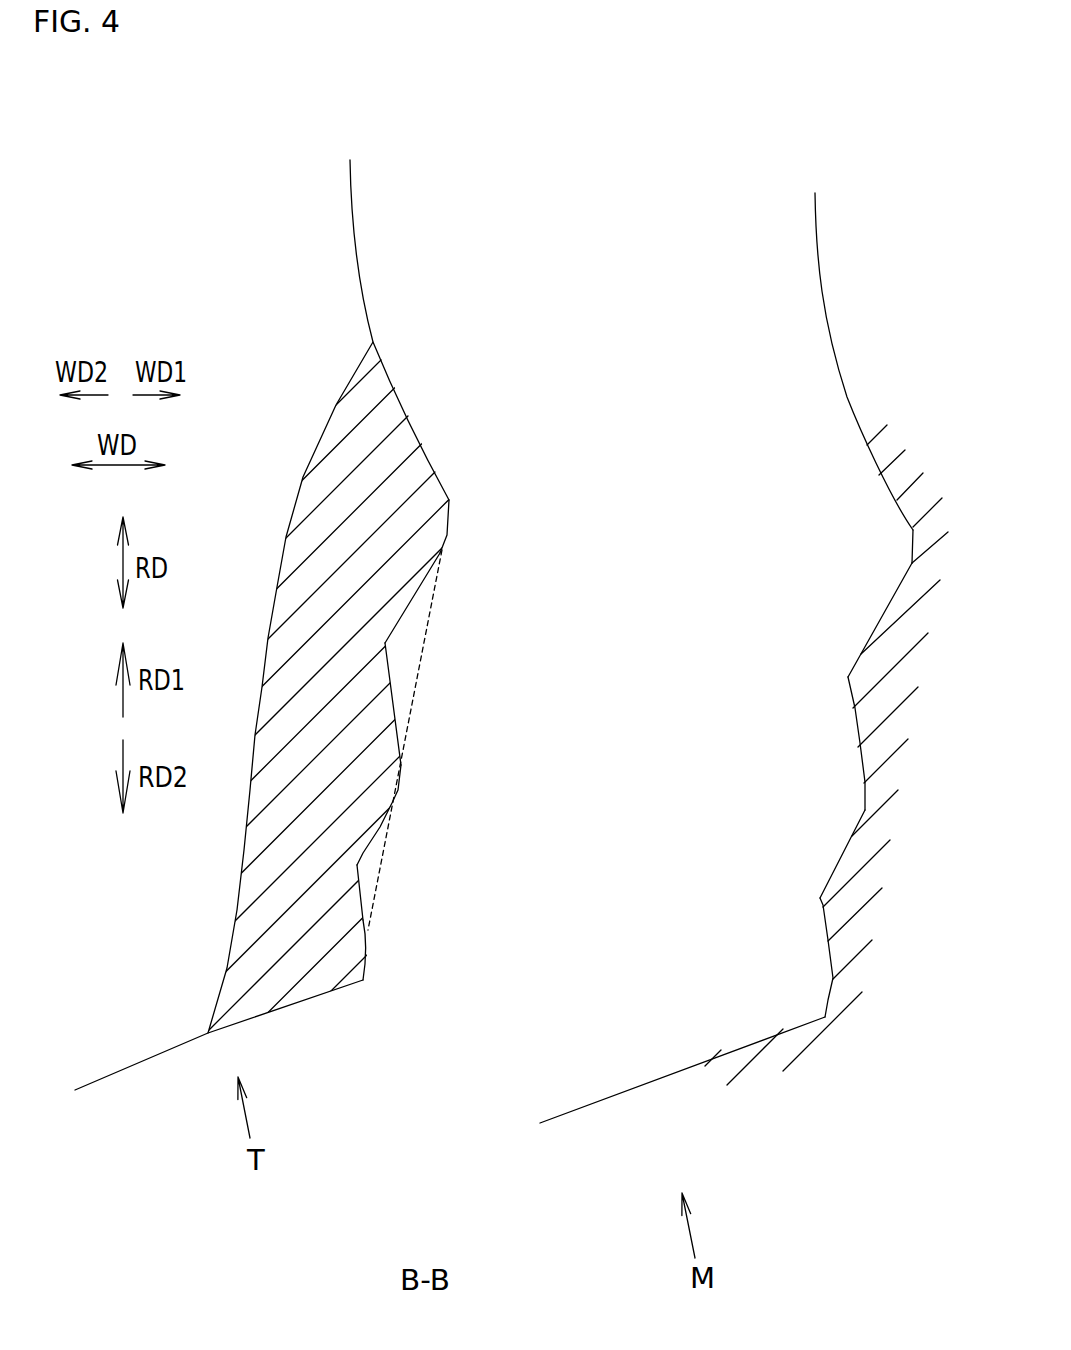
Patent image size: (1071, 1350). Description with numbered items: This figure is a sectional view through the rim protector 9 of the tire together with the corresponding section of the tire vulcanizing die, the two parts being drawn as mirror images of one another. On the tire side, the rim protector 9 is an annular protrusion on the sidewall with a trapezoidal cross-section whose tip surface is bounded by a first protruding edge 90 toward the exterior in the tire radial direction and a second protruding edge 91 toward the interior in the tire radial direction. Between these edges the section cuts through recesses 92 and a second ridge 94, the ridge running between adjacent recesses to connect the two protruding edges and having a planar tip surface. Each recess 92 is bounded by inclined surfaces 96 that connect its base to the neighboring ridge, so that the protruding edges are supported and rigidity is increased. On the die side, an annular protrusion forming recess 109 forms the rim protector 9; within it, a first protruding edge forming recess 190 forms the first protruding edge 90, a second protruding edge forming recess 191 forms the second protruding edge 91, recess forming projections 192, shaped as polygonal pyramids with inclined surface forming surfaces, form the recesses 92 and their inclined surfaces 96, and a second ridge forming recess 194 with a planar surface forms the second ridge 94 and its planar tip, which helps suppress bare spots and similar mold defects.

The rim protector 9 is at (521, 582).
The first protruding edge 90 is at (452, 504).
The second protruding edge 91 is at (365, 978).
The recess 92 is at (398, 655).
The second ridge 94 is at (402, 766).
The inclined surface 96 is at (420, 585).
The annular protrusion forming recess 109 is at (709, 688).
The first protruding edge forming recess 190 is at (910, 548).
The second protruding edge forming recess 191 is at (828, 1002).
The recess forming projection 192 is at (856, 637).
The second ridge forming recess 194 is at (865, 810).